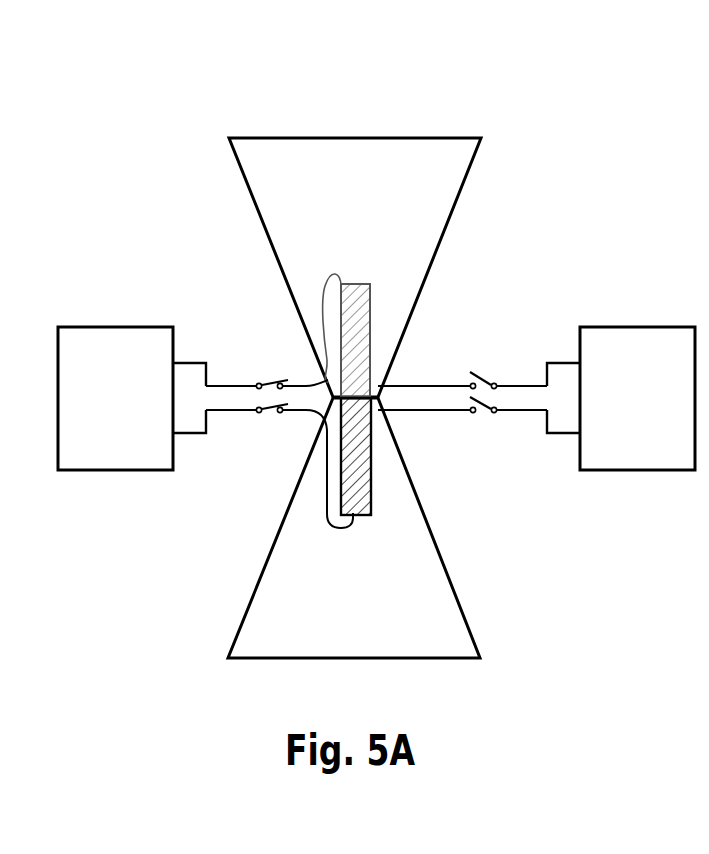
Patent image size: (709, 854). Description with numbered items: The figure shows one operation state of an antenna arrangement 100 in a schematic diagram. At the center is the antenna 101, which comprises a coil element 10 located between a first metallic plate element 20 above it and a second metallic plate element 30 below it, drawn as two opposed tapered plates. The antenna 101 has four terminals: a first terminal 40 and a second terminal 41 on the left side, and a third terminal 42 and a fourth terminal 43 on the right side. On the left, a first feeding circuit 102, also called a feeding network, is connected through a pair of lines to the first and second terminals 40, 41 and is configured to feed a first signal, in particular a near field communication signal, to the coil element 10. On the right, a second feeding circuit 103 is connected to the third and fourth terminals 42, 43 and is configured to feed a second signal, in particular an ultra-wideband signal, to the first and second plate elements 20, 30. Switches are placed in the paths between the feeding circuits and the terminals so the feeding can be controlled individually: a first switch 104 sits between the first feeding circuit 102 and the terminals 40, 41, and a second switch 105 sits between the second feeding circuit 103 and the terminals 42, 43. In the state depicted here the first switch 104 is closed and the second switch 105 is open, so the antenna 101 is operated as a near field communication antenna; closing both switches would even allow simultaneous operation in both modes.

The antenna arrangement 100 is at (470, 98).
The antenna 101 is at (502, 149).
The first metallic plate element 20 is at (462, 187).
The second metallic plate element 30 is at (462, 608).
The coil element 10 is at (390, 505).
The first terminal 40 is at (283, 381).
The second terminal 41 is at (280, 413).
The third terminal 42 is at (471, 371).
The fourth terminal 43 is at (473, 413).
The first feeding circuit 102 is at (116, 471).
The second feeding circuit 103 is at (637, 471).
The first switch 104 is at (259, 428).
The second switch 105 is at (495, 428).